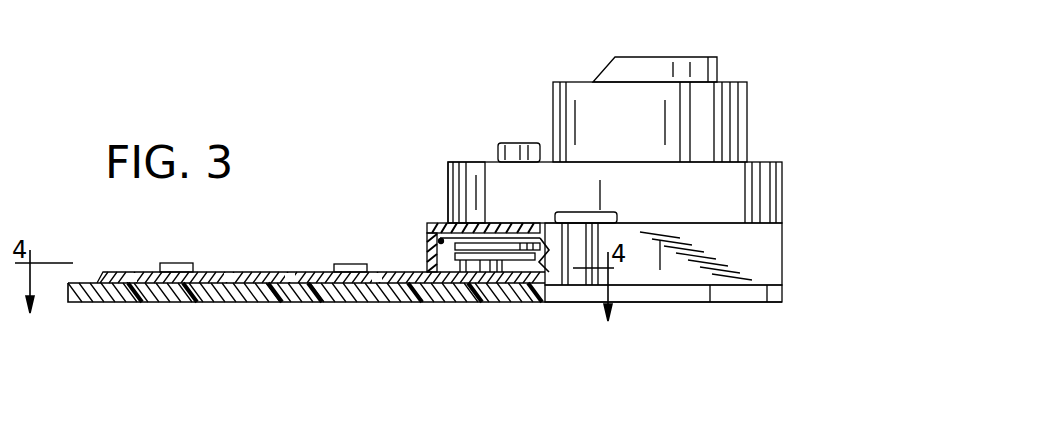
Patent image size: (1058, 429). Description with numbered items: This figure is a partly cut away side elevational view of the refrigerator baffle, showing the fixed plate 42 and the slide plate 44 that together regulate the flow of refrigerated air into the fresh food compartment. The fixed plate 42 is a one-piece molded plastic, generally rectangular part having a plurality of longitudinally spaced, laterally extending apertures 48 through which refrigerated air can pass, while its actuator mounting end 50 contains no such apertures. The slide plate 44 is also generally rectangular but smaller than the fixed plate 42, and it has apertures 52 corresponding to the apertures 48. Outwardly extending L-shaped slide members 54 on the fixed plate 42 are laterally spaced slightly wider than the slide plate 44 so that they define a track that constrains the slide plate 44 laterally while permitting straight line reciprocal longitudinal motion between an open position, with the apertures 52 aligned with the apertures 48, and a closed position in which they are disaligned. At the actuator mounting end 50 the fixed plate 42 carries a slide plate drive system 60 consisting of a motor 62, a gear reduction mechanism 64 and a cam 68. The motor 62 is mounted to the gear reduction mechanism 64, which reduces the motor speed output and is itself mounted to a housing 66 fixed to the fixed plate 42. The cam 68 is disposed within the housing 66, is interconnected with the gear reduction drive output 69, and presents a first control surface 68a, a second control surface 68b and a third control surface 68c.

The fixed plate 42 is at (427, 303).
The slide plate 44 is at (255, 272).
The apertures 48 is at (132, 302).
The actuator mounting end 50 is at (668, 302).
The apertures 52 is at (135, 271).
The L-shaped slide members 54 is at (177, 262).
The slide plate drive system 60 is at (651, 193).
The motor 62 is at (723, 92).
The gear reduction mechanism 64 is at (782, 185).
The housing 66 is at (782, 253).
The cam 68 is at (490, 284).
The first control surface 68a is at (468, 292).
The second control surface 68b is at (488, 303).
The third control surface 68c is at (532, 303).
The gear reduction drive output 69 is at (484, 223).